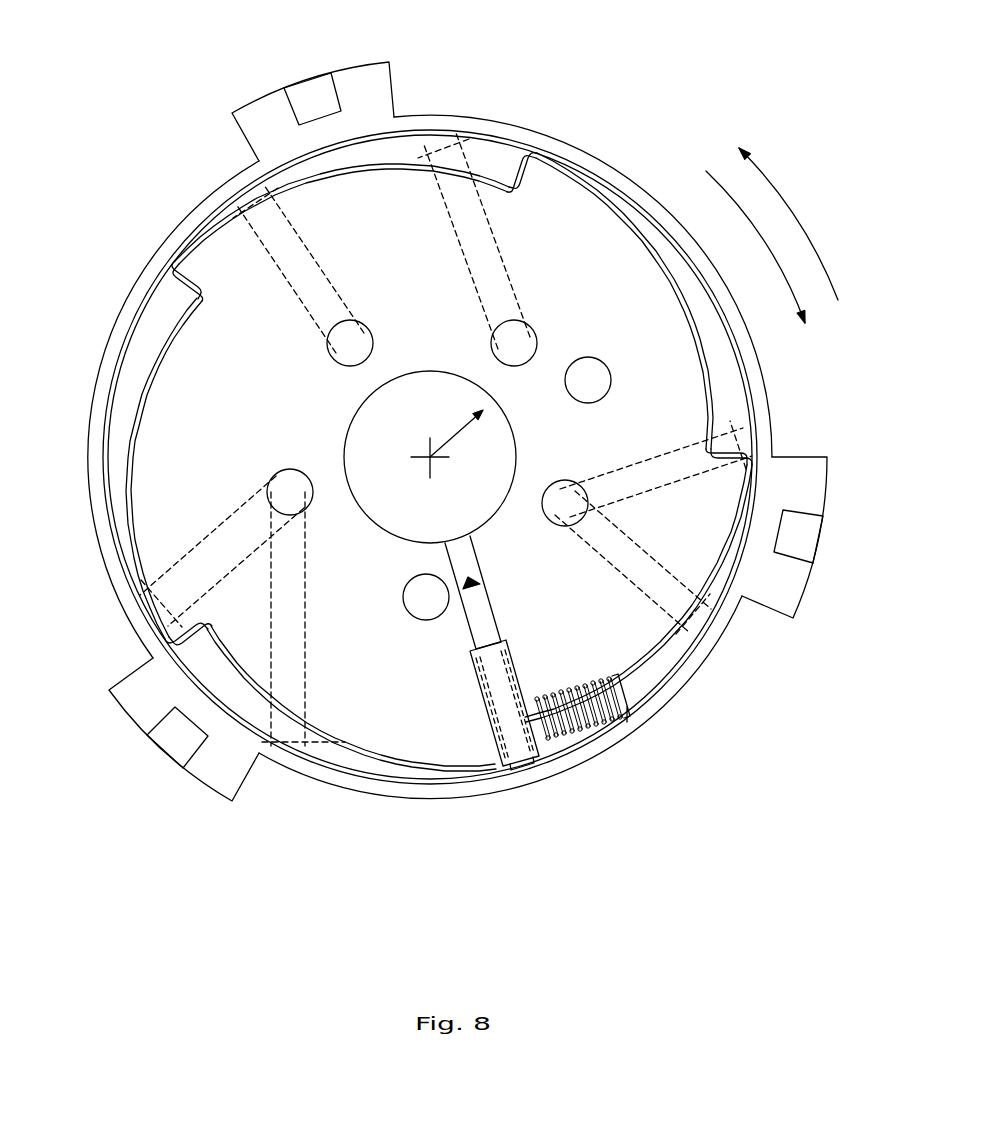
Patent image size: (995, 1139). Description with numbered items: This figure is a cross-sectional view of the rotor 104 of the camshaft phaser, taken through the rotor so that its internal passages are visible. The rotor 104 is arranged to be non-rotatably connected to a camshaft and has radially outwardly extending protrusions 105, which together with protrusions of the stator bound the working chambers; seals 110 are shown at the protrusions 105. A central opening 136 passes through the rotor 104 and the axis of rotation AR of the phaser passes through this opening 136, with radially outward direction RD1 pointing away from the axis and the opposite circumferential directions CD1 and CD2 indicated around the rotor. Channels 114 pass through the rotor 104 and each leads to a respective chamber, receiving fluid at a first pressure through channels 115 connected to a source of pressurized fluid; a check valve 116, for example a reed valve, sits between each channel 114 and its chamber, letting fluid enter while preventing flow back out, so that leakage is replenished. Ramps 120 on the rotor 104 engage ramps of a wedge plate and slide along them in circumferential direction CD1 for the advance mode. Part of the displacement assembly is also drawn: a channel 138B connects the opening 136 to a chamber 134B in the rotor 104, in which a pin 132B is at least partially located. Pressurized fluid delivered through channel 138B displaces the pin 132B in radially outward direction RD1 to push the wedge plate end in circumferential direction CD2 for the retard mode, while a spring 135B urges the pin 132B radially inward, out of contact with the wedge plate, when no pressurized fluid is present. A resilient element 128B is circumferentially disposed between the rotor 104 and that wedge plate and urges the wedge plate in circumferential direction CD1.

The rotor 104 is at (630, 122).
The radially outwardly extending protrusions 105 is at (263, 108).
The seals 110 is at (312, 95).
The channels 114 is at (308, 290).
The channels 115 is at (335, 345).
The check valves 116 is at (447, 150).
The ramps 120 is at (195, 265).
The central opening 136 is at (393, 450).
The channel 138B is at (485, 630).
The chamber 134B is at (472, 650).
The pin 132B is at (528, 760).
The spring 135B is at (498, 742).
The resilient element 128B is at (590, 680).
The radially outward direction RD1 is at (452, 430).
The axis of rotation AR is at (430, 452).
The circumferential direction CD1 is at (795, 293).
The circumferential direction CD2 is at (777, 187).